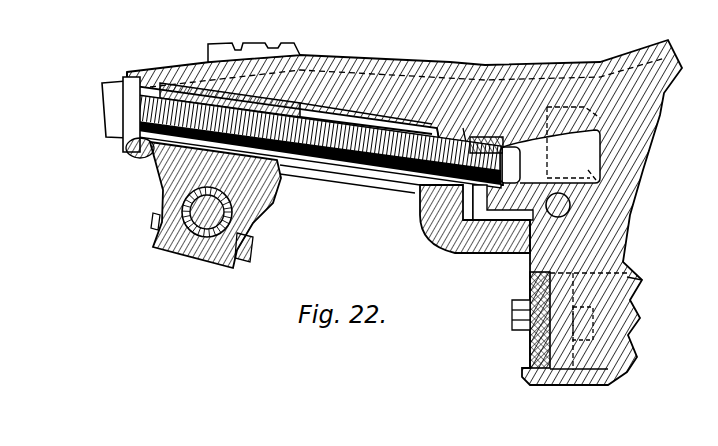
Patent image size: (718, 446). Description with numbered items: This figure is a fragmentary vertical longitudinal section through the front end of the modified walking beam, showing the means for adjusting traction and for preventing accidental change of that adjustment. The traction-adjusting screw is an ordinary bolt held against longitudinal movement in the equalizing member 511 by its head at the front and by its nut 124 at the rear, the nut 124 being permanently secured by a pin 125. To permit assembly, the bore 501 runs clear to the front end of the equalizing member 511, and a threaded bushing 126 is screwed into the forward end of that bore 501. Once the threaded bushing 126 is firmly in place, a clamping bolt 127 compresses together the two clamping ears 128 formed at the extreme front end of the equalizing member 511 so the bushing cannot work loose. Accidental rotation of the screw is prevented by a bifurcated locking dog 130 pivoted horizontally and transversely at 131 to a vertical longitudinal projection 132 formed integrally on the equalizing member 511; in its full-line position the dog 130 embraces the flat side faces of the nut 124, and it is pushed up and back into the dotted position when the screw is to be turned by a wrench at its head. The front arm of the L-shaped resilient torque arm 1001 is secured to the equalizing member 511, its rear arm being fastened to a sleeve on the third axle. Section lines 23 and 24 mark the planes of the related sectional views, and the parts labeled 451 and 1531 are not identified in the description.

The threaded bushing 126 is at (122, 72).
The clamp tab 451 is at (212, 52).
The section line 24 is at (207, 23).
The equalizing member 511 is at (497, 48).
The nut 124 is at (490, 141).
The bifurcated locking dog 130 is at (522, 155).
The vertical longitudinal projection 132 is at (571, 155).
The section line 23 is at (445, 180).
The bore 501 is at (280, 160).
The sleeve 1531 is at (330, 168).
The clamping ears 128 is at (137, 153).
The clamping bolt 127 is at (140, 158).
The pin 125 is at (462, 240).
The pivot 131 is at (553, 212).
The resilient torque arm 1001 is at (525, 357).